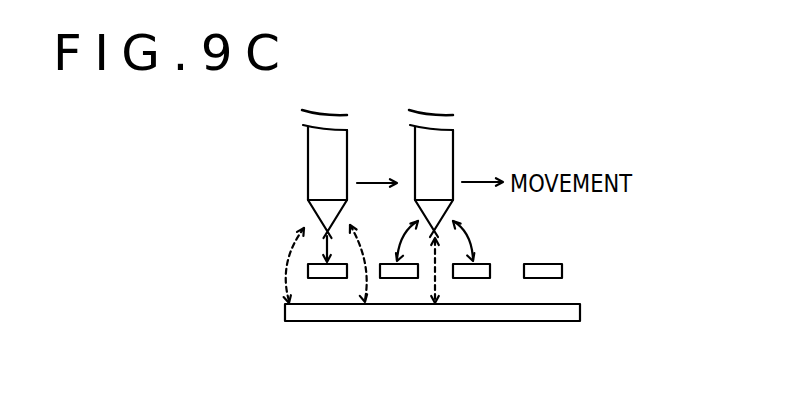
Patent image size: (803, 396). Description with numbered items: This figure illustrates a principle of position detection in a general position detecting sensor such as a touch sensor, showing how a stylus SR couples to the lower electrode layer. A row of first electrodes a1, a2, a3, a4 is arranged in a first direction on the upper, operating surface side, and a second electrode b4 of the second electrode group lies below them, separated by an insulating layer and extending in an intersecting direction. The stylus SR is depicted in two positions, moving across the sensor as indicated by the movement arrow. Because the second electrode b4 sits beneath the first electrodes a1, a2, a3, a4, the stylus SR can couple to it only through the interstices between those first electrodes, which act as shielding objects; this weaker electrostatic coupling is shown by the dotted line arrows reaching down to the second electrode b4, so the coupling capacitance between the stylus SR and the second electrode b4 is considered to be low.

The stylus SR is at (308, 161).
The first electrode a1 is at (327, 283).
The first electrode a2 is at (399, 283).
The first electrode a3 is at (471, 283).
The first electrode a4 is at (543, 283).
The second electrode b4 is at (580, 310).